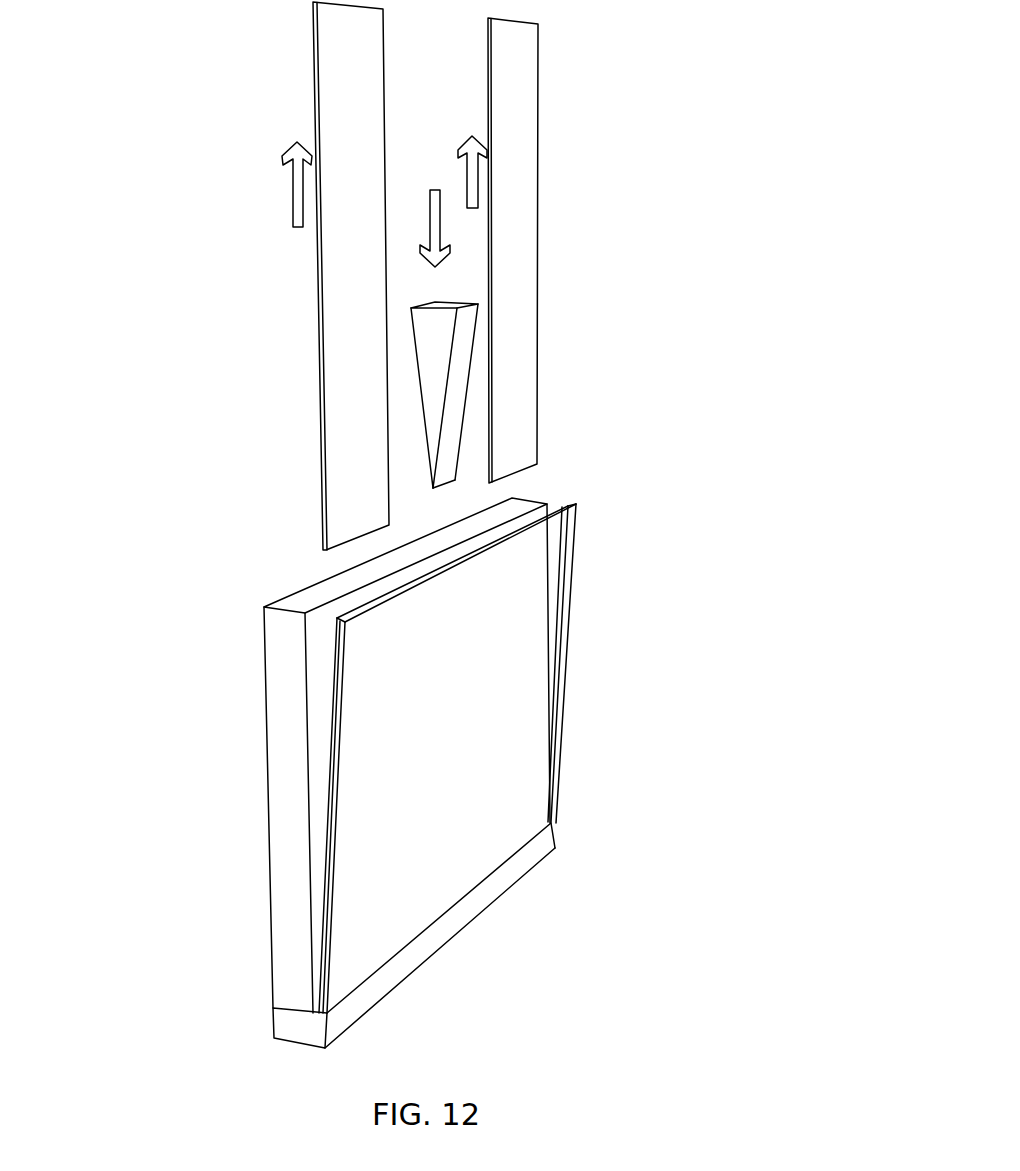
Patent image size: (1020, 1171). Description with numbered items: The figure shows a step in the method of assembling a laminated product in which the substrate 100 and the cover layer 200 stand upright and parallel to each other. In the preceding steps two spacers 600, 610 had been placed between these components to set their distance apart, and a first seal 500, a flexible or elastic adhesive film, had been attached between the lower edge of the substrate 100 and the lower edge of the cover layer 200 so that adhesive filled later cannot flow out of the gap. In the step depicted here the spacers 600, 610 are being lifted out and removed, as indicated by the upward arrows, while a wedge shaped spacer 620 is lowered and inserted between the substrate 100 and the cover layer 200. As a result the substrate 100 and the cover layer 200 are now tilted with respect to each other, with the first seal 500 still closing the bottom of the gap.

The substrate 100 is at (285, 800).
The cover layer 200 is at (562, 535).
The first seal 500 is at (288, 1023).
The spacer 600 is at (347, 297).
The spacer 610 is at (518, 220).
The wedge shaped spacer 620 is at (454, 365).